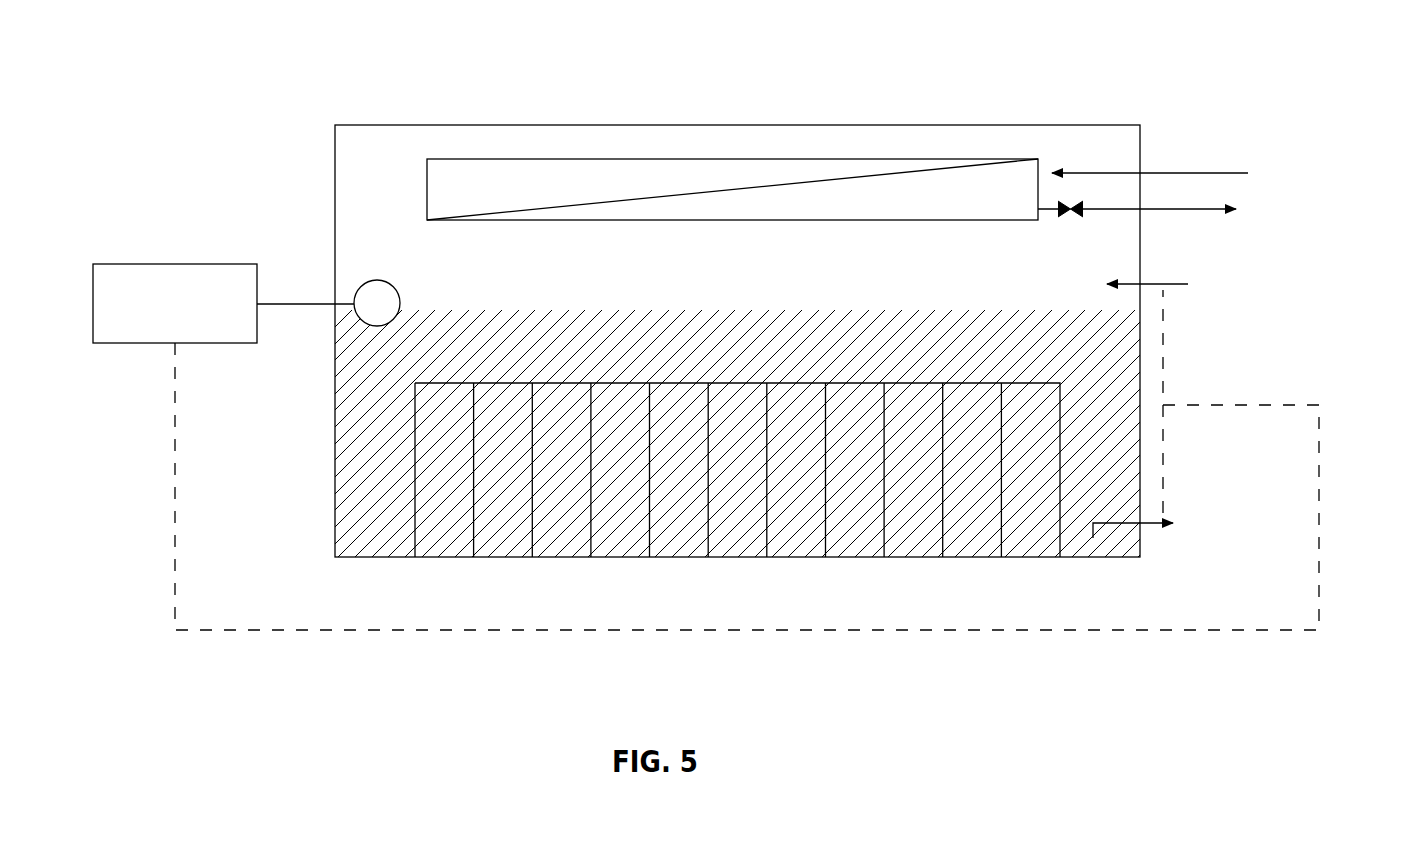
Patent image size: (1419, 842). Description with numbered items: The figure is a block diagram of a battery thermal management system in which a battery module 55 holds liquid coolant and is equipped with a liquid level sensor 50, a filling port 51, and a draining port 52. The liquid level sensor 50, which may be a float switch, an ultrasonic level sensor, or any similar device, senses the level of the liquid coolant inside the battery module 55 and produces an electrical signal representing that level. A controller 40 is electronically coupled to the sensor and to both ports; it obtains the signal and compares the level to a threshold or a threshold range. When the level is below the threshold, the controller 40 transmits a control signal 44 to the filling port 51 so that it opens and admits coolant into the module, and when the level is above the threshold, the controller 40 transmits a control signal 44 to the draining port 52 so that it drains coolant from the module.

The battery module 55 is at (460, 125).
The liquid level sensor 50 is at (348, 256).
The controller 40 is at (223, 303).
The control signal 44 is at (747, 460).
The filling port 51 is at (1168, 288).
The draining port 52 is at (1143, 525).